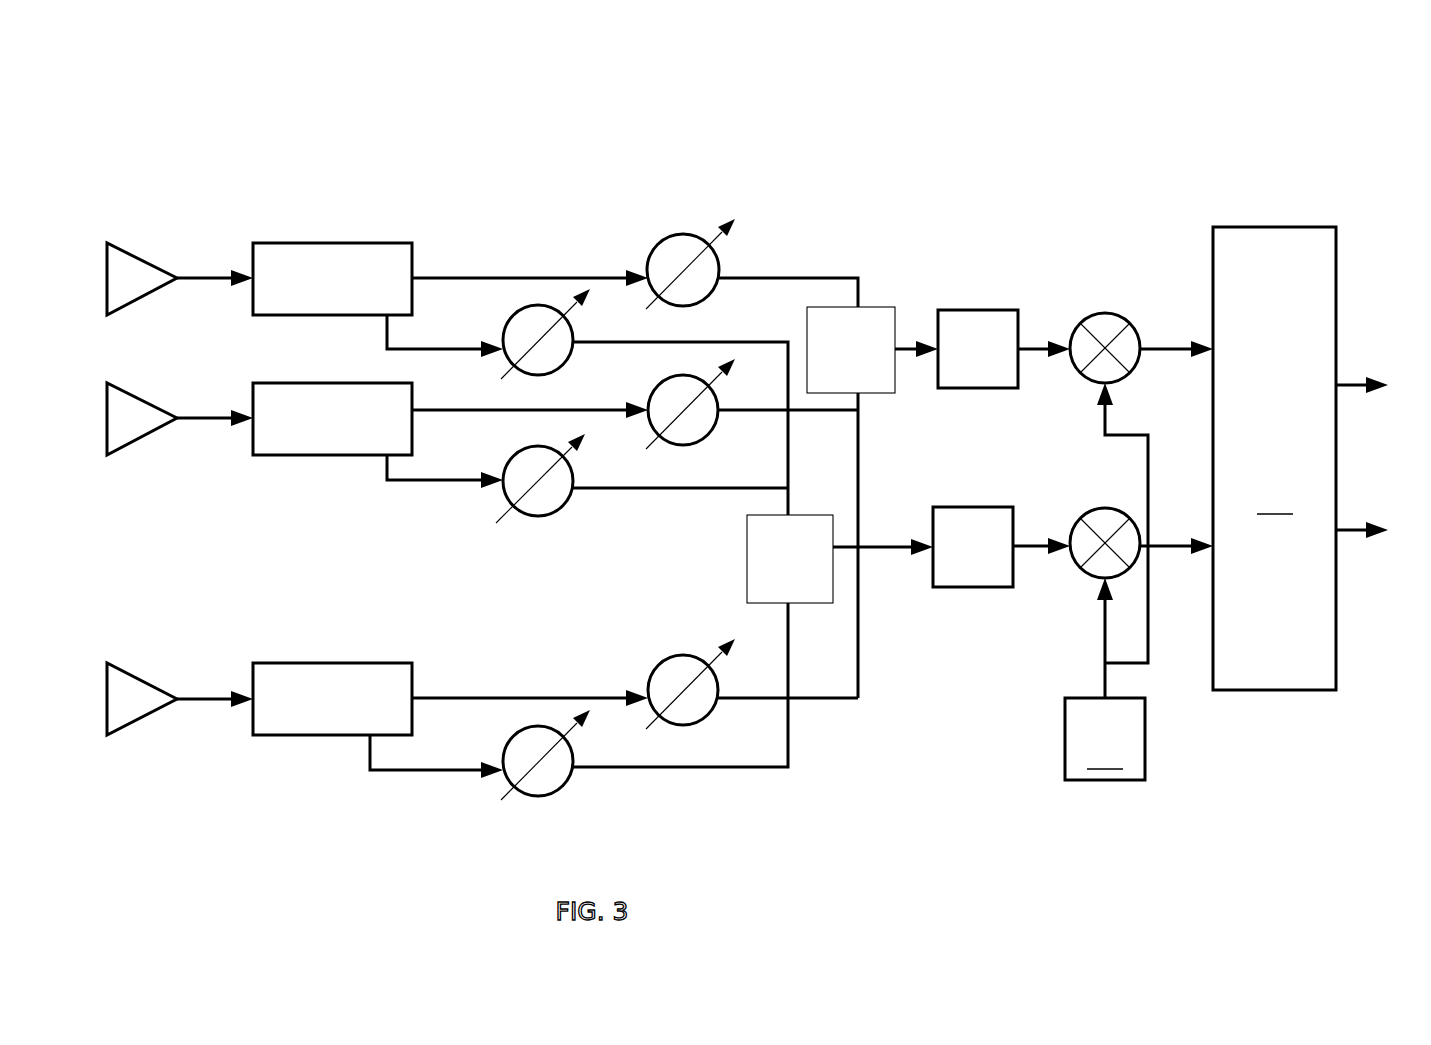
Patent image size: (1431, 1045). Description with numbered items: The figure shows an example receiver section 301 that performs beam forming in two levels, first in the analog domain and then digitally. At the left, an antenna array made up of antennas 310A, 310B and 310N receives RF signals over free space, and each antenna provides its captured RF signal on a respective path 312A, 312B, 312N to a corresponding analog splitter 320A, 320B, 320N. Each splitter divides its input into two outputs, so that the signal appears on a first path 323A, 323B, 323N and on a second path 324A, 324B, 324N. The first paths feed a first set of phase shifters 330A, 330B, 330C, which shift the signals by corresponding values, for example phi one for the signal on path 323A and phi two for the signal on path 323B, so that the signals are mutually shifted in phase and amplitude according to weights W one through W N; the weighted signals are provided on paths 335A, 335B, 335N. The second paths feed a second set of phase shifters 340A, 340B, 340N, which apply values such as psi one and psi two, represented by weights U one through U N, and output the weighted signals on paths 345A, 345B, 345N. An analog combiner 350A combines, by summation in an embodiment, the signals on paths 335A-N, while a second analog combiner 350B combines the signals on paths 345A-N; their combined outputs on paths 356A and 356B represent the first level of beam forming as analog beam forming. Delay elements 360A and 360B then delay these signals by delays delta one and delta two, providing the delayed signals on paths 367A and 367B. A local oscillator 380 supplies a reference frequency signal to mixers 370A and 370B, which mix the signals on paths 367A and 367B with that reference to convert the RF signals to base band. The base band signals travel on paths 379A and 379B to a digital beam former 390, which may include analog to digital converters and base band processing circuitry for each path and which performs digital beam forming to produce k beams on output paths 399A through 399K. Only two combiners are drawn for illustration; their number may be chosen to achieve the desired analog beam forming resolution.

The receiver section 301 is at (775, 138).
The antenna 310A is at (103, 278).
The antenna 310B is at (103, 418).
The antenna 310N is at (103, 699).
The path 312A is at (195, 275).
The path 312B is at (207, 415).
The path 312N is at (207, 695).
The analog splitter 320A is at (352, 243).
The analog splitter 320B is at (338, 383).
The analog splitter 320N is at (342, 663).
The path 323A is at (530, 279).
The path 323B is at (530, 411).
The path 323N is at (530, 699).
The path 324A is at (445, 336).
The path 324B is at (445, 471).
The path 324N is at (436, 756).
The phase shifter 330A is at (697, 303).
The phase shifter 330B is at (697, 443).
The phase shifter 330C is at (690, 727).
The phase shifter 340A is at (537, 375).
The phase shifter 340B is at (540, 516).
The phase shifter 340N is at (543, 797).
The path 335A is at (808, 272).
The path 335B is at (823, 413).
The path 335N is at (838, 703).
The path 345A is at (753, 344).
The path 345B is at (683, 490).
The path 345N is at (725, 770).
The analog combiner 350A is at (851, 350).
The analog combiner 350B is at (790, 559).
The path 356A is at (910, 345).
The path 356B is at (893, 543).
The delay element 360A is at (978, 349).
The delay element 360B is at (973, 547).
The path 367A is at (1038, 357).
The path 367B is at (1038, 555).
The mixer 370A is at (1101, 312).
The mixer 370B is at (1078, 520).
The path 379A is at (1160, 352).
The path 379B is at (1180, 548).
The local oscillator 380 is at (1106, 581).
The digital beam former 390 is at (1274, 458).
The path 399A is at (1360, 380).
The path 399K is at (1360, 525).